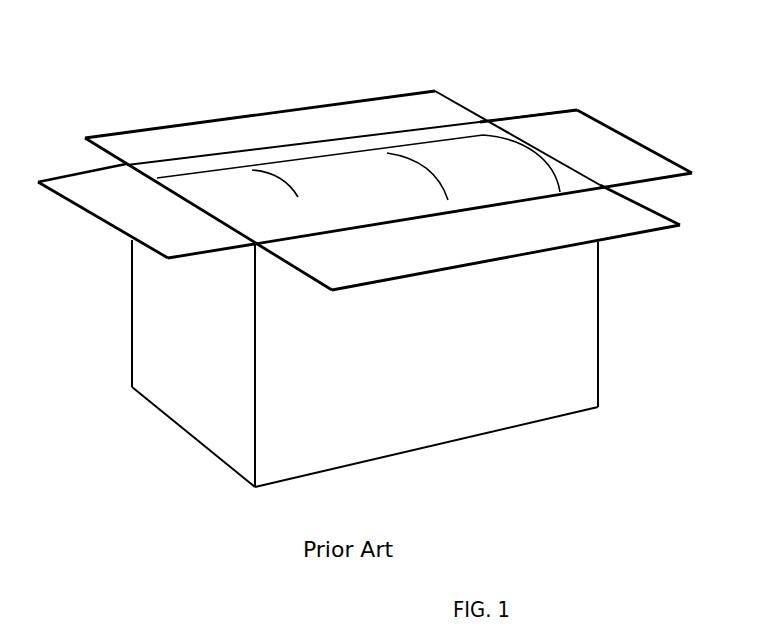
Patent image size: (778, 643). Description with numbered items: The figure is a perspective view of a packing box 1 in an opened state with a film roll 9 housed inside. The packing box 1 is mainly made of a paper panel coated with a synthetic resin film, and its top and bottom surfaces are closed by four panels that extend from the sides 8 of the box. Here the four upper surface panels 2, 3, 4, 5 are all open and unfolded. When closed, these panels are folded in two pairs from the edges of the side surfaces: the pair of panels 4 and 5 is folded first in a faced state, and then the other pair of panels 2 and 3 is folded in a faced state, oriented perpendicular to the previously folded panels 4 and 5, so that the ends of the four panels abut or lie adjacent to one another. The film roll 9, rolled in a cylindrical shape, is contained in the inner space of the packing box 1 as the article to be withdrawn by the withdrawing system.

The packing box 1 is at (637, 100).
The upper surface panel 2 is at (324, 118).
The upper surface panel 3 is at (342, 260).
The upper surface panel 4 is at (589, 148).
The upper surface panel 5 is at (80, 183).
The side 8 is at (469, 377).
The film roll 9 is at (382, 177).